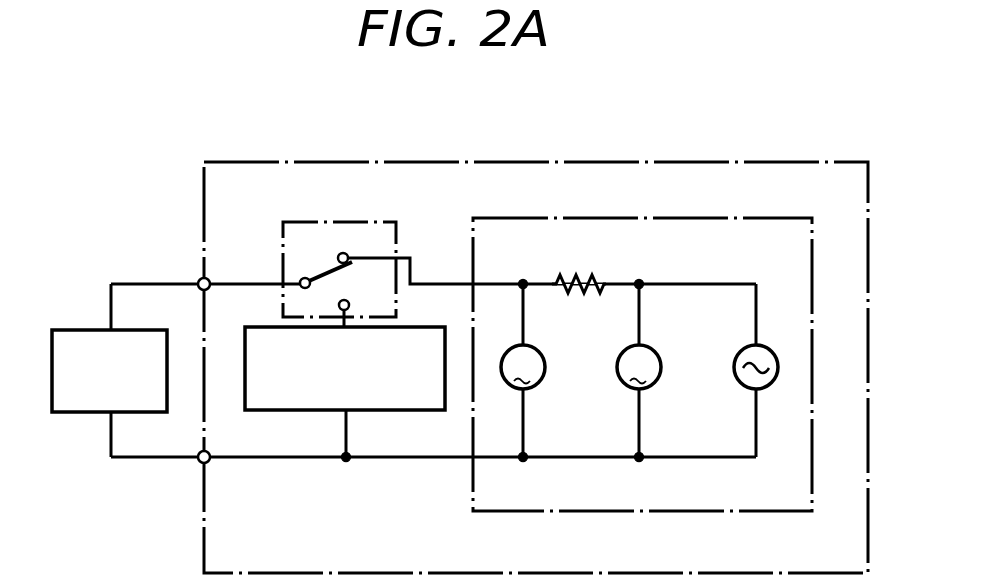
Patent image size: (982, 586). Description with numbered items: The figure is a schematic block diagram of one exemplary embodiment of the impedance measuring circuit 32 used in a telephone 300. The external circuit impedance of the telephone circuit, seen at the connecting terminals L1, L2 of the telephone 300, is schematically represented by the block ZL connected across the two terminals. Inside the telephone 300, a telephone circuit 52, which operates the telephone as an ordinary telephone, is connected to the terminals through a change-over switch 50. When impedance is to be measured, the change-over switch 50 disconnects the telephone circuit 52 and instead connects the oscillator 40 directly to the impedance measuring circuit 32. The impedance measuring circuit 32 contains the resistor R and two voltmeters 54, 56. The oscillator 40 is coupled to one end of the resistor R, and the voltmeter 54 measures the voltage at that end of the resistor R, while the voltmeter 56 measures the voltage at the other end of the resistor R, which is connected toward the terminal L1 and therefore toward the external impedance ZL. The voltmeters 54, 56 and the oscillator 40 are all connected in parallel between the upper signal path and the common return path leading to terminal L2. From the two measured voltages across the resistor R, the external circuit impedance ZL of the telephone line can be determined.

The telephone 300 is at (577, 160).
The change-over switch 50 is at (375, 221).
The telephone circuit 52 is at (446, 327).
The impedance measuring circuit 32 is at (673, 217).
The resistor R is at (580, 272).
The voltmeter 56 is at (541, 353).
The voltmeter 54 is at (689, 333).
The oscillator 40 is at (786, 333).
The connecting terminal L1 is at (198, 279).
The connecting terminal L2 is at (201, 463).
The external circuit impedance ZL is at (109, 370).